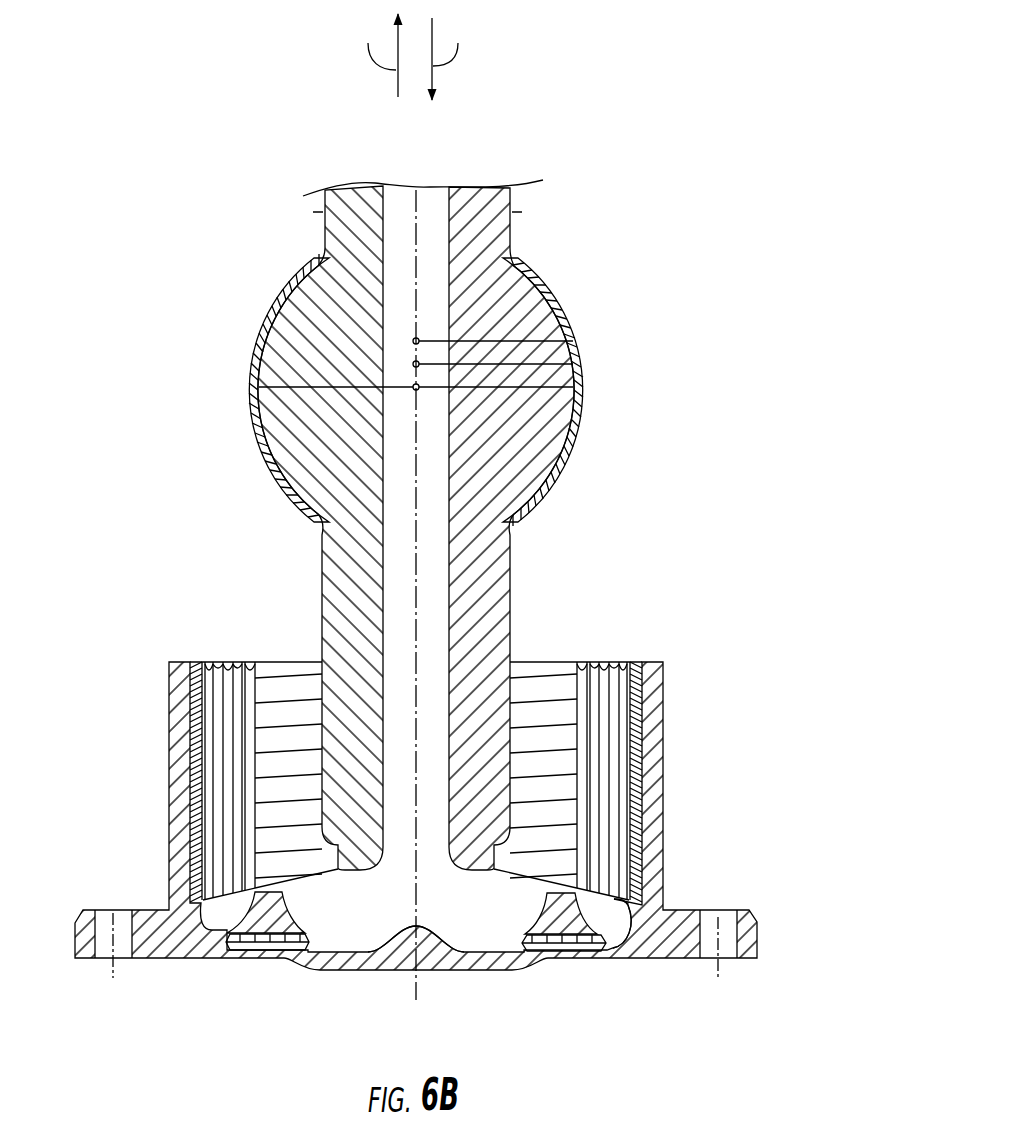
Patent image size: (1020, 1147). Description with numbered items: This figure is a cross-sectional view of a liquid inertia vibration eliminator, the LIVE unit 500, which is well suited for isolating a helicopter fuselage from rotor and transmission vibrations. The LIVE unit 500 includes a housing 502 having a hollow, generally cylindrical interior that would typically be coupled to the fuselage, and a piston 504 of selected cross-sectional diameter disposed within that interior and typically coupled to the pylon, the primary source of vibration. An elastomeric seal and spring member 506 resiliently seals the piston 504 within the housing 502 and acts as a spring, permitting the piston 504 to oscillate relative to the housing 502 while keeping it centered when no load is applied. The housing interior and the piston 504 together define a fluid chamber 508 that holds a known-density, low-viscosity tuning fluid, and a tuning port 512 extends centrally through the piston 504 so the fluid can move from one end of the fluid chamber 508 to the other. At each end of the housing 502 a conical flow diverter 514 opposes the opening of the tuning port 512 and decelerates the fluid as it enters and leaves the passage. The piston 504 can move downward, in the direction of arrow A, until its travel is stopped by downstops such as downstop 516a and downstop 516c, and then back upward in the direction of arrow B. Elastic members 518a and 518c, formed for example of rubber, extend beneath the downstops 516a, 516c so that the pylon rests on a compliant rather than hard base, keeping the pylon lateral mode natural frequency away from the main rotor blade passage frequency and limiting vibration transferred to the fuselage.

The LIVE unit 500 is at (634, 96).
The housing 502 is at (633, 960).
The piston 504 is at (472, 187).
The elastomeric seal and spring member 506 is at (222, 662).
The fluid chamber 508 is at (617, 920).
The tuning port 512 is at (404, 182).
The conical flow diverter 514 is at (368, 970).
The downstop 516a is at (540, 913).
The downstop 516c is at (303, 913).
The elastic member 518a is at (530, 952).
The elastic member 518c is at (268, 952).